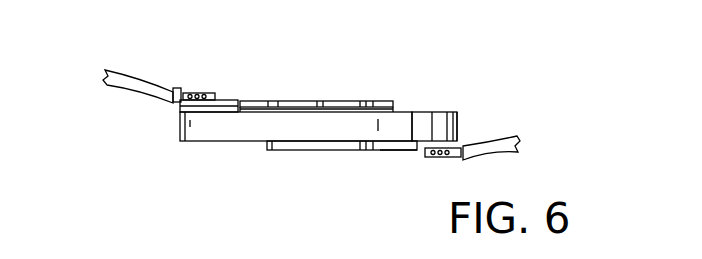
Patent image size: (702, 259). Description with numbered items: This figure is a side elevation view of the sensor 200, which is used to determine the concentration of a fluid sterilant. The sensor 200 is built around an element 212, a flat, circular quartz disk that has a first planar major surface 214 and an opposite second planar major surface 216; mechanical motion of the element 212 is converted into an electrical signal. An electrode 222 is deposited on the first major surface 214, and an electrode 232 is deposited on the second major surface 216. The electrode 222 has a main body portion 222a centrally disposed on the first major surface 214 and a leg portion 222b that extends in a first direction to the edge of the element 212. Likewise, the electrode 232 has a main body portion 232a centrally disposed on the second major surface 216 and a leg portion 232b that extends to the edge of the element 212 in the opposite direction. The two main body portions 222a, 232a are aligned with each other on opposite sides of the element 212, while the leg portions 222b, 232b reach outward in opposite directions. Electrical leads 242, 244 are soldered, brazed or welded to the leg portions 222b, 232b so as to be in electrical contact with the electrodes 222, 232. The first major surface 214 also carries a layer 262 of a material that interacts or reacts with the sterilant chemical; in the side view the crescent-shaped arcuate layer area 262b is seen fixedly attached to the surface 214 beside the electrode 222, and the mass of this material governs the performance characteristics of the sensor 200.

The sensor 200 is at (498, 107).
The element 212 is at (462, 112).
The first planar major surface 214 is at (425, 112).
The second planar major surface 216 is at (208, 142).
The electrode 222 is at (287, 100).
The main body portion 222a is at (352, 105).
The leg portion 222b is at (230, 108).
The electrode 232 is at (273, 153).
The main body portion 232a is at (325, 148).
The leg portion 232b is at (412, 143).
The electrical lead 242 is at (123, 90).
The electrical lead 244 is at (507, 156).
The layer 262 is at (388, 108).
The arcuate layer area 262b is at (317, 100).